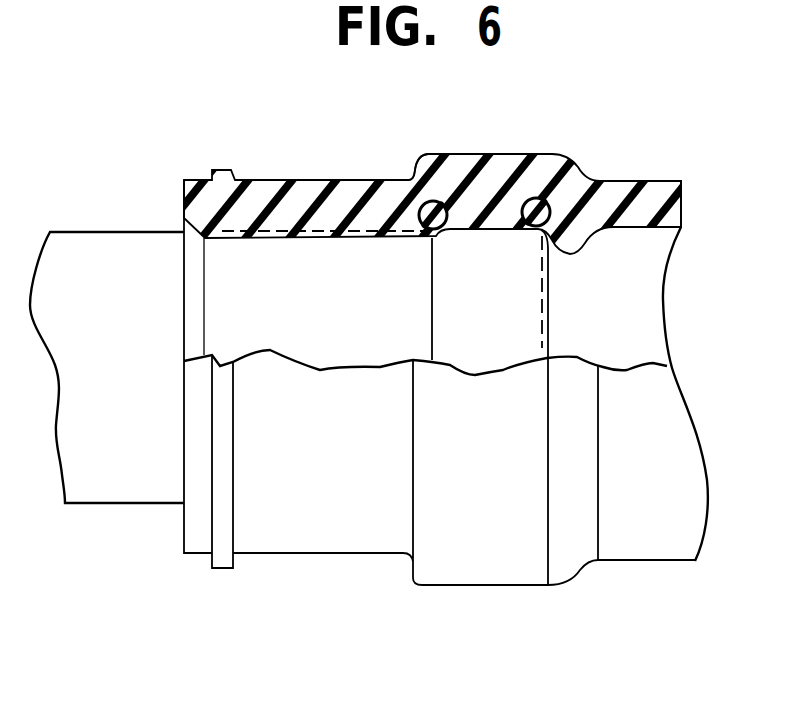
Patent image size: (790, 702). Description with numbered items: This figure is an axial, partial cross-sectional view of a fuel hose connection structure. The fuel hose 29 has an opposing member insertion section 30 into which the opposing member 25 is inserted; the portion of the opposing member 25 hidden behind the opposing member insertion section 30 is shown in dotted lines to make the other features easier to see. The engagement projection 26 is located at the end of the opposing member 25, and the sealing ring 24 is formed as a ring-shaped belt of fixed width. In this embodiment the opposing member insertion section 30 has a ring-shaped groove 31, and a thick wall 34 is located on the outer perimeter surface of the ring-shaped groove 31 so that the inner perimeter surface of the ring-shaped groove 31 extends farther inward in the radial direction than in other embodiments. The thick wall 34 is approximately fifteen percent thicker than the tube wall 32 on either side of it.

The opposing member insertion section 30 is at (281, 180).
The tube wall 32 is at (430, 165).
The ring-shaped groove 31 is at (451, 178).
The thick wall 34 is at (508, 203).
The fuel hose 29 is at (652, 178).
The sealing ring 24 is at (465, 236).
The engagement projection 26 is at (514, 233).
The opposing member 25 is at (549, 313).